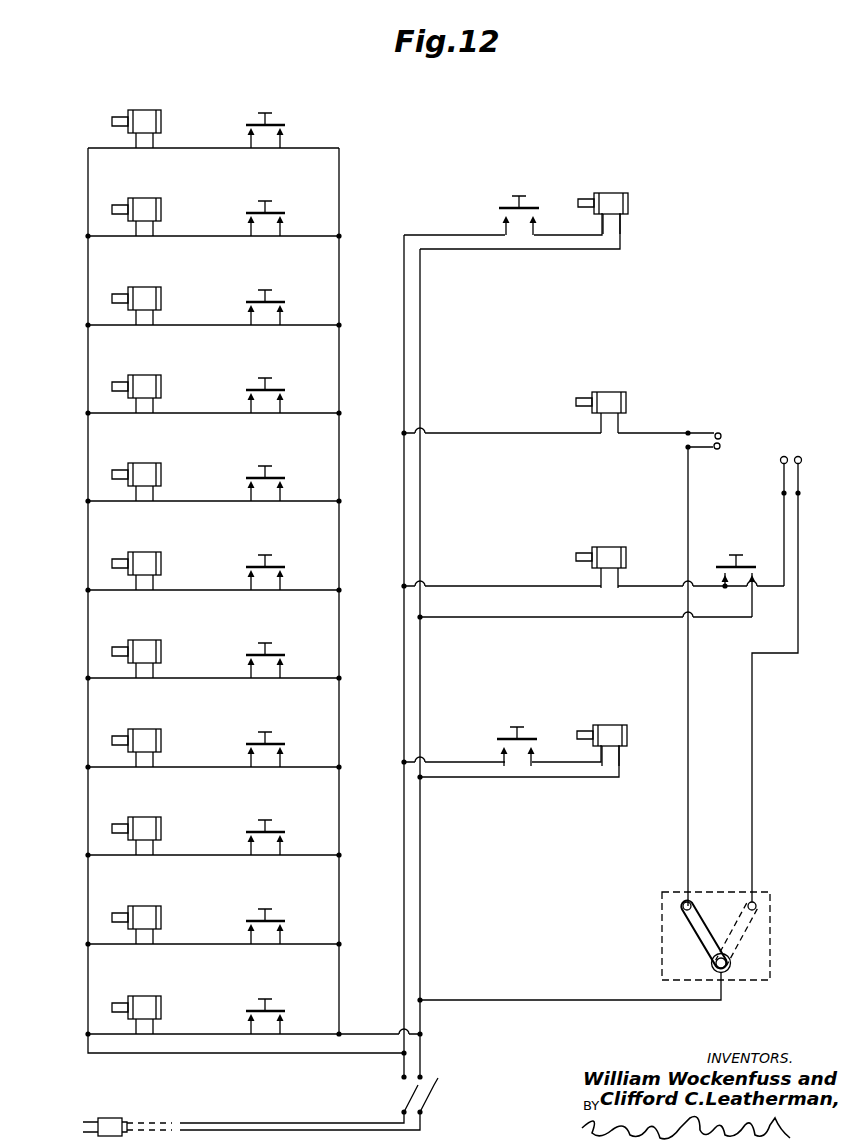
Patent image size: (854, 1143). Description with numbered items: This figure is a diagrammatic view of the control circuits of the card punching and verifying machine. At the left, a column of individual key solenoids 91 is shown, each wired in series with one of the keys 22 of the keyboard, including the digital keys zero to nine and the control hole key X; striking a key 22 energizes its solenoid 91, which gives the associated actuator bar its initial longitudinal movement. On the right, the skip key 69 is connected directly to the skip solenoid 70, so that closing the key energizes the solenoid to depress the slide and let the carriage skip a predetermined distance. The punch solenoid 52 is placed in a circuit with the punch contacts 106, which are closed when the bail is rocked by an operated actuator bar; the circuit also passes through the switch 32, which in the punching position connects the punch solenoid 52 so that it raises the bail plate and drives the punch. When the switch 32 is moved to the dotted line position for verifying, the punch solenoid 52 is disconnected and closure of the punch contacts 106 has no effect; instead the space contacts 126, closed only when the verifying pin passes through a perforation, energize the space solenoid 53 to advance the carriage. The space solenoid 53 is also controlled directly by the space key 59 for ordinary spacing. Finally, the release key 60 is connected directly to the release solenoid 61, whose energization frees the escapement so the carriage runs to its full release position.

The key solenoid 91 is at (149, 110).
The keys 22 is at (283, 124).
The skip key 69 is at (532, 206).
The skip solenoid 70 is at (608, 198).
The punch solenoid 52 is at (612, 400).
The punch contacts 106 is at (724, 443).
The space contacts 126 is at (798, 456).
The space solenoid 53 is at (612, 553).
The space key 59 is at (745, 567).
The release key 60 is at (530, 738).
The release solenoid 61 is at (608, 730).
The switch 32 is at (695, 935).